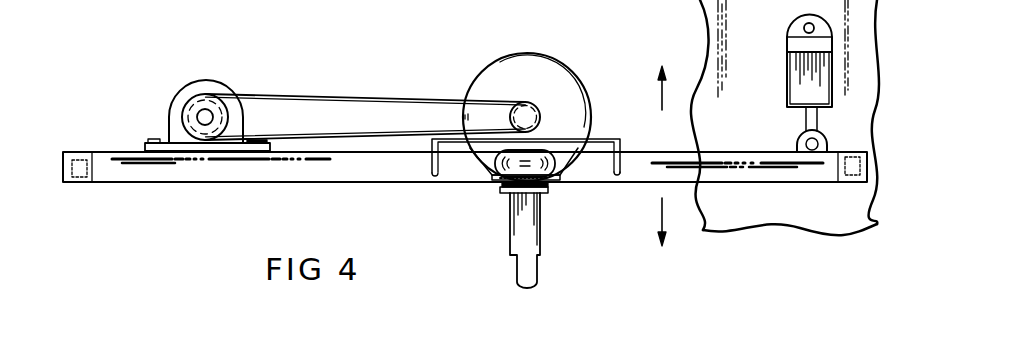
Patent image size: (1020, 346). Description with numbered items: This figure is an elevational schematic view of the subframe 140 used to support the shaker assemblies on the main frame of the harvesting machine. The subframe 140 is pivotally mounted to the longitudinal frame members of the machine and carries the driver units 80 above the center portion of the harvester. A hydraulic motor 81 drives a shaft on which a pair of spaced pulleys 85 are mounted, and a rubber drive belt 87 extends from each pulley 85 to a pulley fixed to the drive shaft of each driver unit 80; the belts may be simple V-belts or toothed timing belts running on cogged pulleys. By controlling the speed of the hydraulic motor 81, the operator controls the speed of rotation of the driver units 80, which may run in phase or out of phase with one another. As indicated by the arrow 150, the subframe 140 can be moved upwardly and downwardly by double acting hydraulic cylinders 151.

The driver unit 80 is at (568, 72).
The hydraulic motor 81 is at (217, 80).
The pulley 85 is at (187, 110).
The rubber drive belt 87 is at (317, 95).
The subframe 140 is at (598, 170).
The arrow 150 is at (657, 93).
The double acting hydraulic cylinder 151 is at (788, 78).